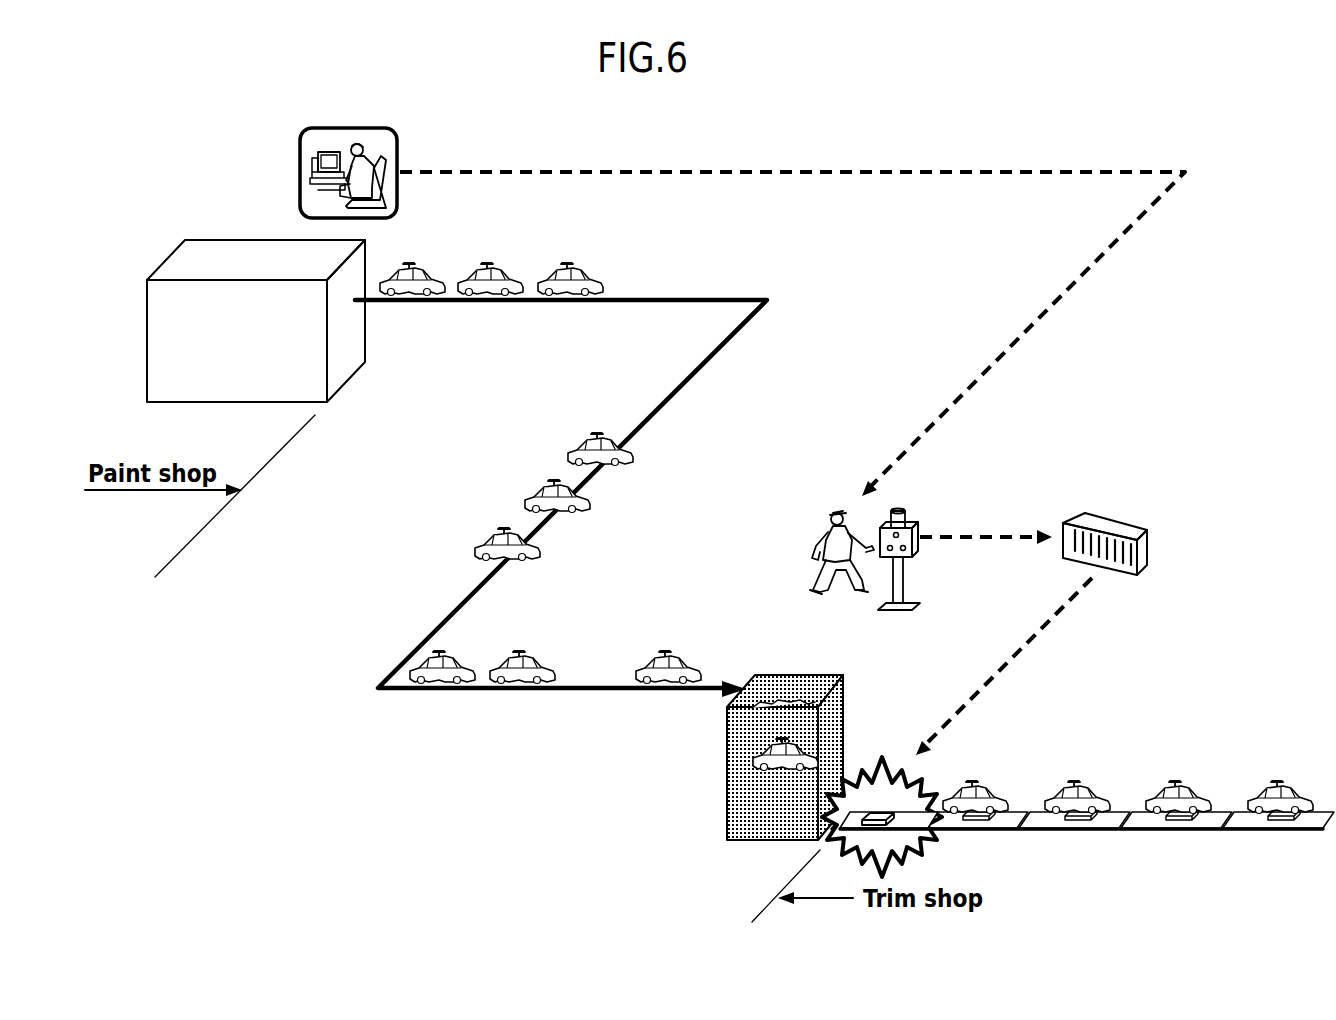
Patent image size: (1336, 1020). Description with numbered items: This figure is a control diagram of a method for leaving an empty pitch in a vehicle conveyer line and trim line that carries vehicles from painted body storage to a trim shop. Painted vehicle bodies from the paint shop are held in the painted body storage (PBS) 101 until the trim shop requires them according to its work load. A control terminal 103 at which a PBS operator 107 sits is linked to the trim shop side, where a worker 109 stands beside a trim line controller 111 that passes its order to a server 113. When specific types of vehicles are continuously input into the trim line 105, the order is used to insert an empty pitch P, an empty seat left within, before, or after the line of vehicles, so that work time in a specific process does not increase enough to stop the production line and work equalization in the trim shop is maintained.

The painted body storage (PBS) 101 is at (150, 346).
The control terminal / management server 103 is at (393, 134).
The trim line 105 is at (1240, 830).
The operator 107 is at (356, 140).
The worker 109 is at (808, 540).
The vehicle identification sensor 111 is at (912, 527).
The server 113 is at (1147, 548).
The empty pitch P is at (909, 802).